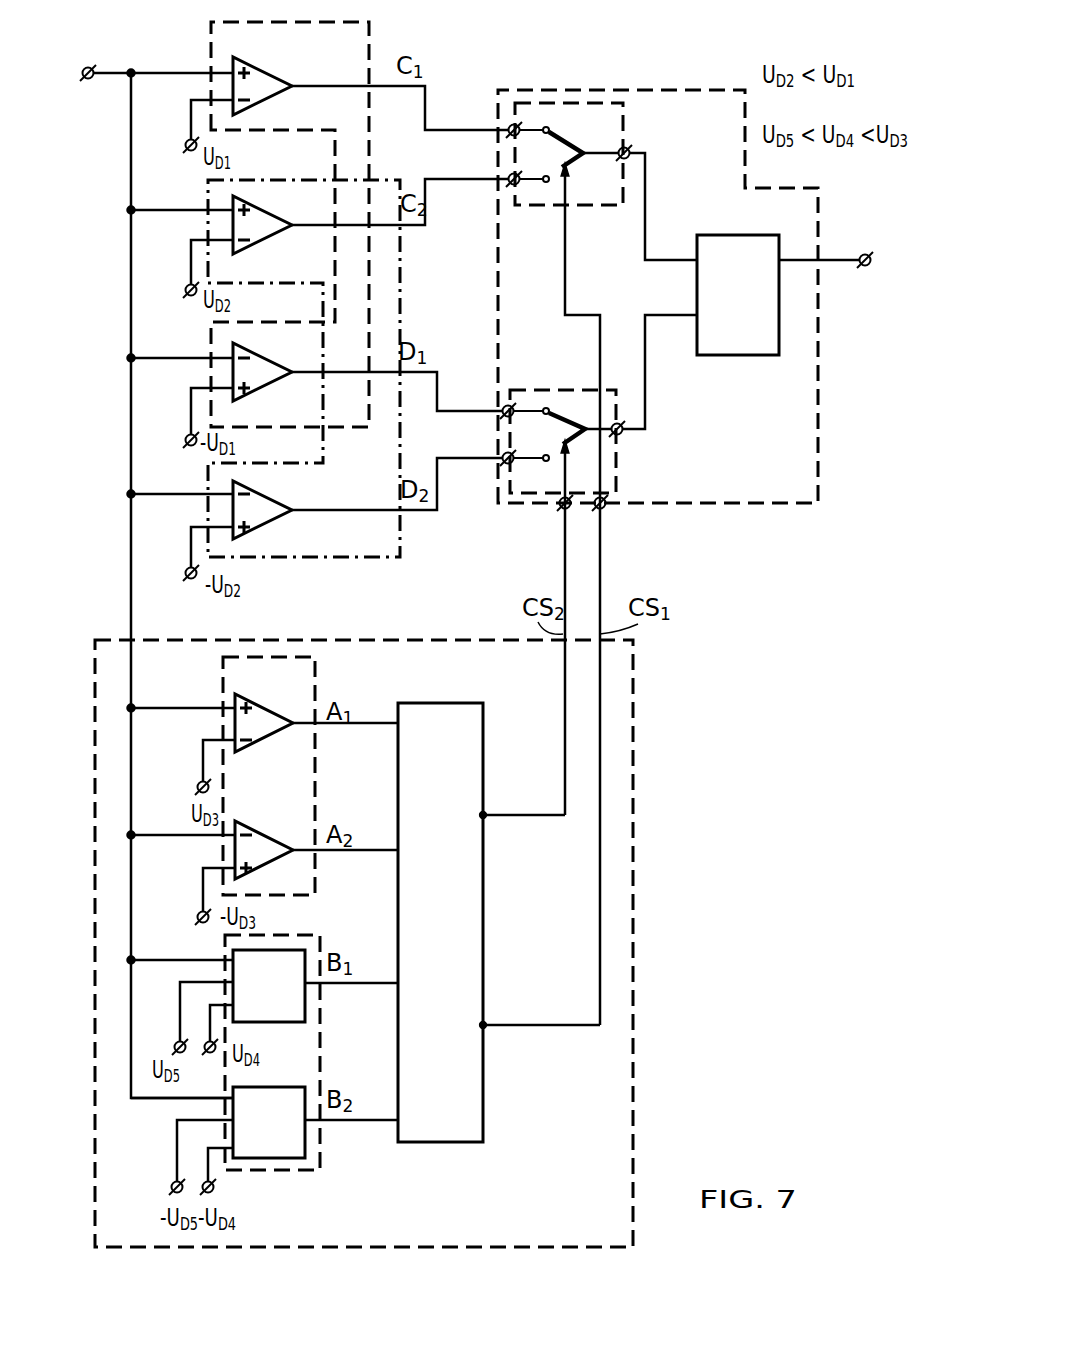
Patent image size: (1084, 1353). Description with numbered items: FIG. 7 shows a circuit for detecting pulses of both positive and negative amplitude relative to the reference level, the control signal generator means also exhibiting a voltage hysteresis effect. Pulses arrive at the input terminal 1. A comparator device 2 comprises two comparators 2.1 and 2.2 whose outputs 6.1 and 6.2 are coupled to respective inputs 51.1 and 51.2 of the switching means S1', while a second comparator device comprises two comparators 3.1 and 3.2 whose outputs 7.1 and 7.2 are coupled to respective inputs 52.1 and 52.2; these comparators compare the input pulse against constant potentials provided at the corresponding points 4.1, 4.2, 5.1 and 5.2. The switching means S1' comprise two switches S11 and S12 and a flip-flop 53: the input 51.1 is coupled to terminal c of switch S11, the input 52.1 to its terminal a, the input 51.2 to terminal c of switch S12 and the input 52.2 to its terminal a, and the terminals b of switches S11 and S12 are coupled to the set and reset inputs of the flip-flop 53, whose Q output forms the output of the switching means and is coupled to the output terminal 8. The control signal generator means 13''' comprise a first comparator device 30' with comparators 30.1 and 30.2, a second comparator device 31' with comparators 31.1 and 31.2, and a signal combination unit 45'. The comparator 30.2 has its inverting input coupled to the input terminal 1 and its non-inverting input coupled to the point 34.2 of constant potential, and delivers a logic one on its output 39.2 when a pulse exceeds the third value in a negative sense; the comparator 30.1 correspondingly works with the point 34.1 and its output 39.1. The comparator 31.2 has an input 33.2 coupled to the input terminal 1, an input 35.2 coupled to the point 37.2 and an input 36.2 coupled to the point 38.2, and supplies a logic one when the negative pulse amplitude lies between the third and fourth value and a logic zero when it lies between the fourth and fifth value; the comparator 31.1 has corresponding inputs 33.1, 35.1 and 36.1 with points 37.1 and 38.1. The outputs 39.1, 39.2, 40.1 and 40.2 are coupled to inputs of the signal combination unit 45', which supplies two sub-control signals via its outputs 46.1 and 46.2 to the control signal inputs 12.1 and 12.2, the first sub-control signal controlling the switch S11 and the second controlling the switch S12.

The input terminal 1 is at (88, 67).
The comparator device 2 is at (313, 22).
The comparator 2.1 is at (256, 68).
The comparator 2.2 is at (260, 355).
The comparator 3.1 is at (264, 212).
The comparator 3.2 is at (268, 499).
The threshold voltage terminal UD1 4.1 is at (186, 140).
The threshold voltage terminal -UD1 4.2 is at (187, 435).
The threshold voltage terminal UD2 5.1 is at (187, 284).
The threshold voltage terminal -UD2 5.2 is at (187, 566).
The output 6.1 is at (312, 85).
The output 6.2 is at (340, 371).
The output 7.1 is at (348, 228).
The output 7.2 is at (316, 513).
The output terminal 8 is at (866, 266).
The control signal input 12.1 is at (603, 510).
The control signal input 12.2 is at (555, 518).
The control signal generator means 13''' is at (391, 943).
The first comparator device 30' is at (249, 774).
The first comparator 30.1 is at (275, 708).
The second comparator 30.2 is at (258, 829).
The second comparator device 31' is at (276, 1070).
The first comparator 31.1 is at (285, 950).
The second comparator 31.2 is at (268, 1087).
The input line 33.1 is at (230, 958).
The input 33.2 is at (233, 1098).
The threshold terminal UD3 34.1 is at (199, 781).
The point of constant potential 34.2 is at (199, 911).
The threshold input line 35.1 is at (233, 1005).
The input 35.2 is at (233, 1148).
The threshold input line 36.1 is at (233, 982).
The input 36.2 is at (232, 1121).
The threshold terminal UD4 37.1 is at (206, 1062).
The point of constant potential 37.2 is at (214, 1188).
The threshold terminal UD5 38.1 is at (175, 1042).
The point of constant potential 38.2 is at (173, 1181).
The output 39.1 is at (326, 725).
The output 39.2 is at (326, 852).
The output 40.1 is at (350, 985).
The output 40.2 is at (348, 1122).
The signal combination unit 45' is at (440, 904).
The output 46.1 is at (486, 1028).
The output 46.2 is at (487, 812).
The input 51.1 is at (497, 127).
The input 51.2 is at (496, 408).
The input 52.1 is at (499, 176).
The input 52.2 is at (497, 460).
The flip-flop 53 is at (730, 235).
The switch S11 is at (623, 118).
The switch S12 is at (522, 390).
The switching means S1' is at (684, 296).